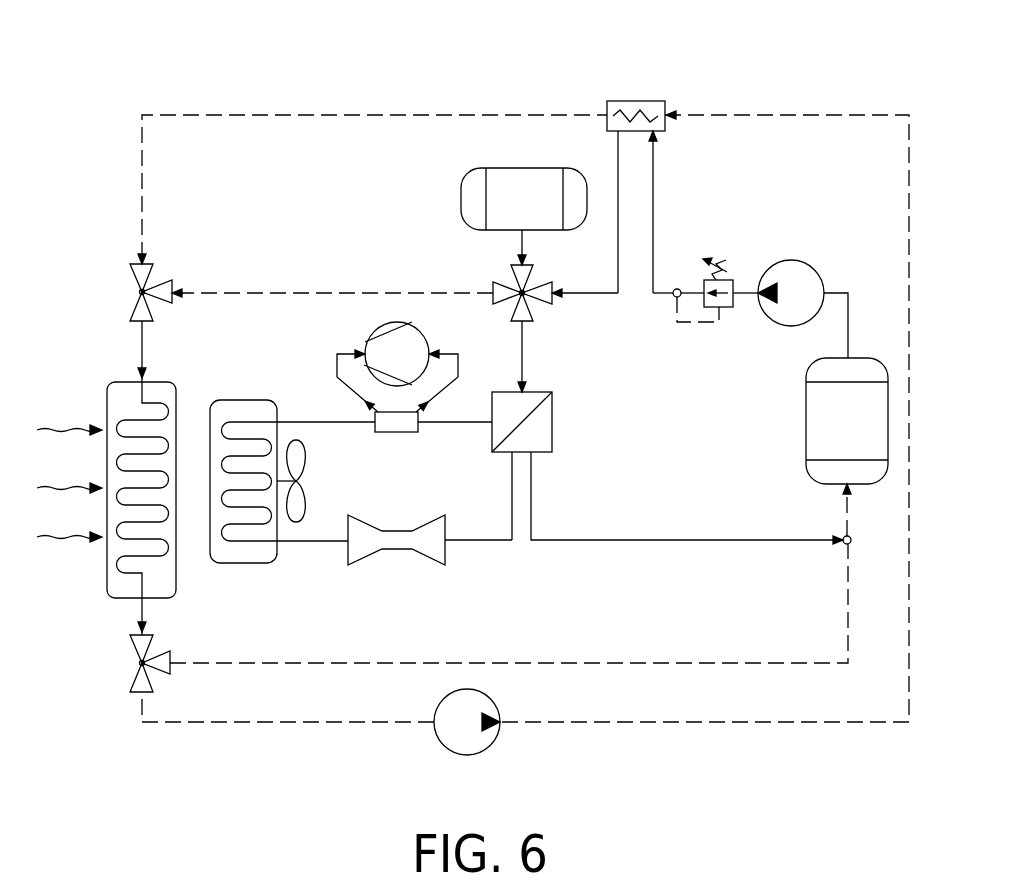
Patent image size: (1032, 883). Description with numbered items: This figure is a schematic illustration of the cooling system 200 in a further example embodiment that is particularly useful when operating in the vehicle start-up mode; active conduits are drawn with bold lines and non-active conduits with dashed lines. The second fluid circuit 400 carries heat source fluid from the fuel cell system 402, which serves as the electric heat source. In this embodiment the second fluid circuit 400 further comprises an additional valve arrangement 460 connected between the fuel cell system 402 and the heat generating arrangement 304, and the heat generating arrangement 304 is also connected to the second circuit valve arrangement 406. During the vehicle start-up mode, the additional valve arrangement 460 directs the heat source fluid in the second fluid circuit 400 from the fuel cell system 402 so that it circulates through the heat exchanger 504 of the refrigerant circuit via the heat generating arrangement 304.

The cooling system 200 is at (471, 84).
The heat generating arrangement 304 is at (635, 101).
The second fluid circuit 400 is at (653, 198).
The additional valve arrangement 460 is at (733, 282).
The fuel cell system 402 is at (806, 422).
The second circuit valve arrangement 406 is at (535, 309).
The heat exchanger 504 is at (552, 422).